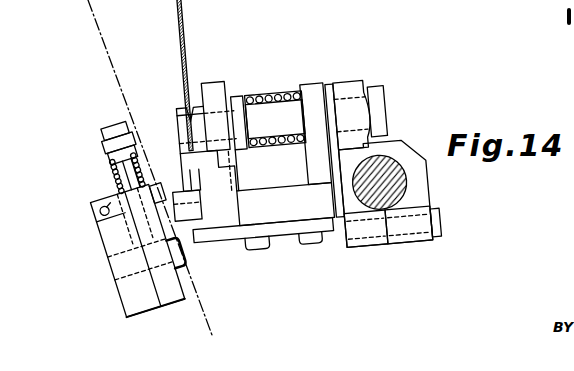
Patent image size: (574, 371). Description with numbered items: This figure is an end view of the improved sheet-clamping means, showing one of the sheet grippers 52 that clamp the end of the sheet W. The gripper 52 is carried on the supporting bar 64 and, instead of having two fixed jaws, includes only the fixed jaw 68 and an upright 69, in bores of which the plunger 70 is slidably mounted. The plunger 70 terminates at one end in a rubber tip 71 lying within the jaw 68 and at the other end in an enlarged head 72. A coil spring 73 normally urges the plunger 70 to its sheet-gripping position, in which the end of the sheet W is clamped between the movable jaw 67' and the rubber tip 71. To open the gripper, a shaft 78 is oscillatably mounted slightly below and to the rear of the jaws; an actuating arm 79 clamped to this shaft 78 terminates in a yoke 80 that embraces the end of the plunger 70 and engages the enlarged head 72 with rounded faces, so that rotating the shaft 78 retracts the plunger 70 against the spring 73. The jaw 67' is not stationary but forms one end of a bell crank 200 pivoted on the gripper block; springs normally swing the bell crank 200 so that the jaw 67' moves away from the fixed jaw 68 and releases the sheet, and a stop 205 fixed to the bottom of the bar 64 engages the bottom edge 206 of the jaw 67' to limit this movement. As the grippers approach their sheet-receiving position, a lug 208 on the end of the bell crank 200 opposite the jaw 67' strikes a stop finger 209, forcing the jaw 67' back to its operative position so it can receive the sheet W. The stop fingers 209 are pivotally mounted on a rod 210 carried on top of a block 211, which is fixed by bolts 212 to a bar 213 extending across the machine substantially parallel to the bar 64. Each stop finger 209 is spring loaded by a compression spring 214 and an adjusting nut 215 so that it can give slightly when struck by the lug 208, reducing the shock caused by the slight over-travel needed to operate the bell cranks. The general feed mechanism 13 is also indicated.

The sheet W is at (185, 13).
The feed mechanism 13 is at (226, 329).
The sheet gripper 52 is at (255, 76).
The supporting bar 64 is at (257, 217).
The movable jaw 67' is at (175, 138).
The fixed jaw 68 is at (218, 77).
The upright 69 is at (313, 92).
The plunger 70 is at (276, 97).
The rubber tip 71 is at (194, 100).
The enlarged head 72 is at (380, 93).
The coil spring 73 is at (285, 144).
The shaft 78 is at (397, 190).
The actuating arm 79 is at (400, 147).
The yoke 80 is at (345, 86).
The bell crank 200 is at (188, 185).
The stop 205 is at (256, 248).
The bottom edge 206 is at (312, 248).
The lug 208 is at (186, 214).
The stop finger 209 is at (164, 193).
The rod 210 is at (97, 210).
The block 211 is at (113, 250).
The bolt 212 is at (117, 283).
The bar 213 is at (163, 303).
The compression spring 214 is at (113, 168).
The adjusting nut 215 is at (106, 142).